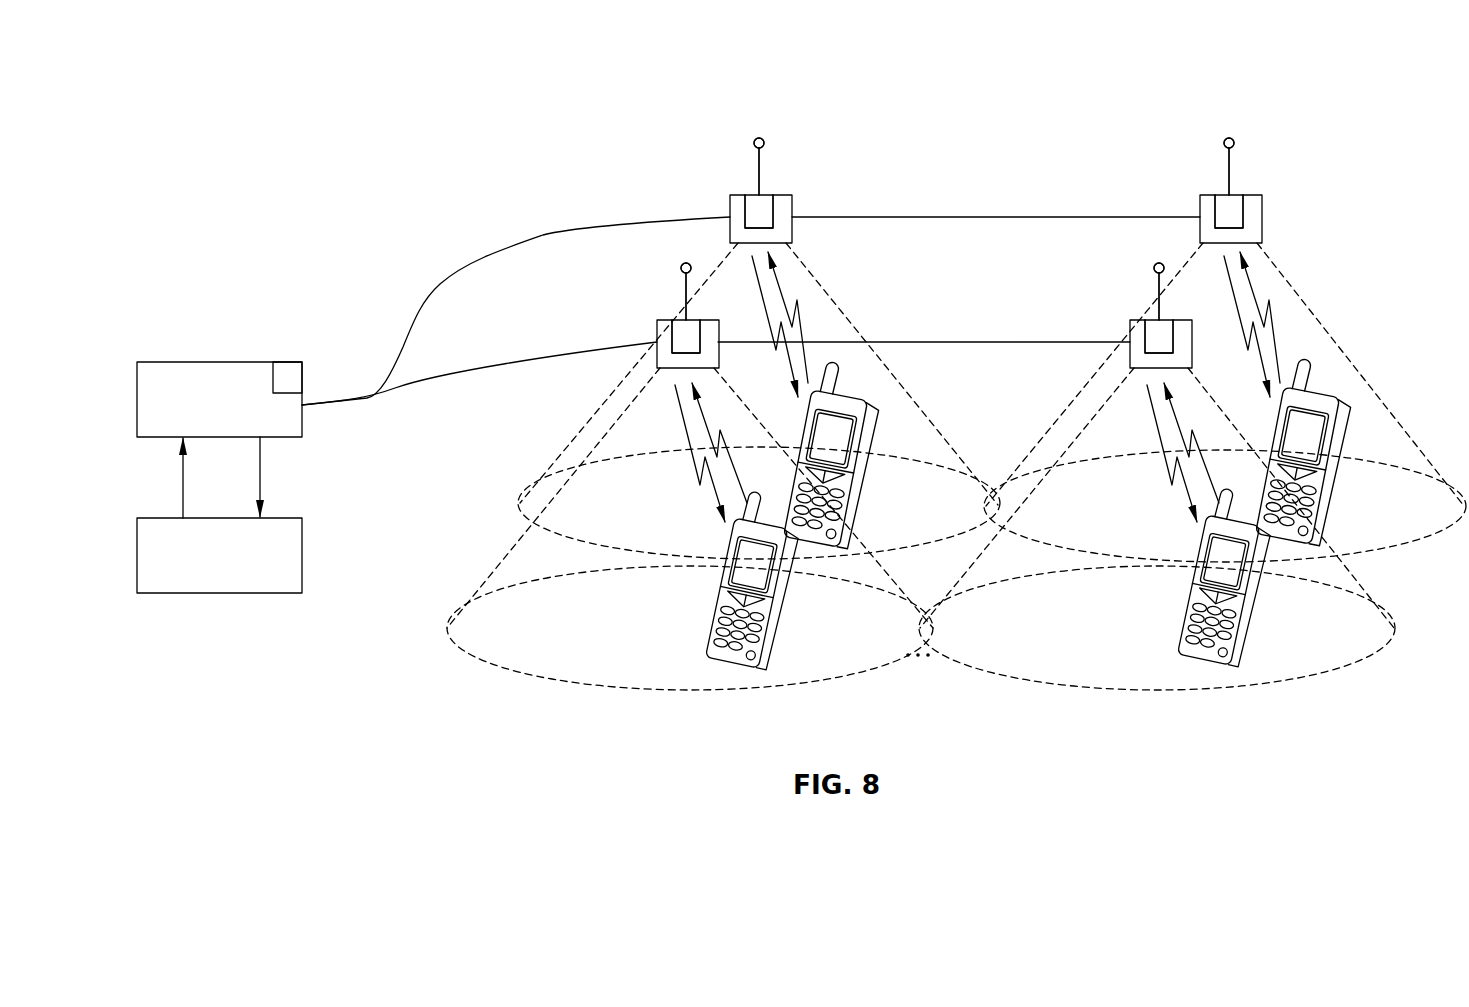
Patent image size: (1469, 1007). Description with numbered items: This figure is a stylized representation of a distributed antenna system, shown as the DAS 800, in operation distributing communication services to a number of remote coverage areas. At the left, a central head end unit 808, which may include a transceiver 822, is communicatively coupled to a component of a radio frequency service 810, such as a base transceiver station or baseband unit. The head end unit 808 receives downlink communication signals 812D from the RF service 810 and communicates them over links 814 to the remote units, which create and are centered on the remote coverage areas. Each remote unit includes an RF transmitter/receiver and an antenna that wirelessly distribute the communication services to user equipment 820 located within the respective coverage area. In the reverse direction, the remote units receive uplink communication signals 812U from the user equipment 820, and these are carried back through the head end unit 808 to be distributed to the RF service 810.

The DAS 800 is at (1052, 126).
The head end unit 808 is at (238, 416).
The RF service 810 is at (238, 571).
The downlink communication signals 812D is at (183, 490).
The uplink communication signals 812U is at (262, 490).
The communications link / fronthaul 814 is at (540, 237).
The user equipment 820 is at (875, 428).
The transceiver 822 is at (287, 375).